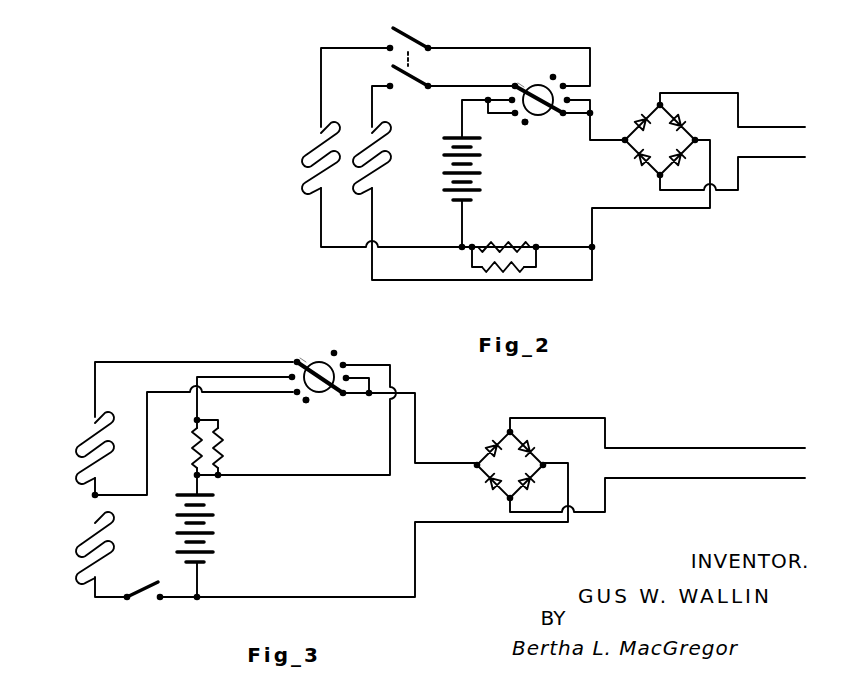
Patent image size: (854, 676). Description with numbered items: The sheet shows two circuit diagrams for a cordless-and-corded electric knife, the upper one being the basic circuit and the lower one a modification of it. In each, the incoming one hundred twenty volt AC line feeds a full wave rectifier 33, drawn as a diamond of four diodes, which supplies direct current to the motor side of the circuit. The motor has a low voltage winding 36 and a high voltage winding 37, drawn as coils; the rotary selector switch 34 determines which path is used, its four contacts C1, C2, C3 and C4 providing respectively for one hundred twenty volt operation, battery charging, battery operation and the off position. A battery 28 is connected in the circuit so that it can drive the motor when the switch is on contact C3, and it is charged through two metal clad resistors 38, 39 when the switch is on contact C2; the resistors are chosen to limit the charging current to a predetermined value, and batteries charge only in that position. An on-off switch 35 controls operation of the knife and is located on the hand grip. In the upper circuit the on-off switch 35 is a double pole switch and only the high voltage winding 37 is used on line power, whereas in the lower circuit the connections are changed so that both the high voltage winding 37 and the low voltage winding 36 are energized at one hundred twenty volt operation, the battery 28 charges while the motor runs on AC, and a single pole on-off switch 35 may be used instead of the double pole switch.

In FIG. 2, the battery 28 is at (478, 190).
In FIG. 3, the battery 28 is at (215, 550).
In FIG. 2, the full wave rectifier 33 is at (652, 108).
In FIG. 3, the full wave rectifier 33 is at (507, 432).
In FIG. 2, the selector switch 34 is at (539, 84).
In FIG. 3, the selector switch 34 is at (325, 362).
In FIG. 2, the on-off switch 35 is at (414, 37).
In FIG. 3, the on-off switch 35 is at (145, 598).
In FIG. 2, the low voltage winding 36 is at (310, 153).
In FIG. 3, the low voltage winding 36 is at (76, 540).
In FIG. 2, the high voltage winding 37 is at (386, 168).
In FIG. 3, the high voltage winding 37 is at (80, 443).
In FIG. 2, the metal clad resistor 38 is at (518, 245).
In FIG. 3, the metal clad resistor 38 is at (193, 442).
In FIG. 2, the metal clad resistor 39 is at (496, 270).
In FIG. 3, the metal clad resistor 39 is at (222, 446).
In FIG. 2, the contact C1 is at (519, 83).
In FIG. 3, the contact C1 is at (303, 356).
In FIG. 2, the contact C2 is at (513, 85).
In FIG. 3, the contact C2 is at (293, 360).
In FIG. 2, the contact C3 is at (514, 116).
In FIG. 3, the contact C3 is at (294, 396).
In FIG. 2, the contact C4 is at (526, 125).
In FIG. 3, the contact C4 is at (306, 404).